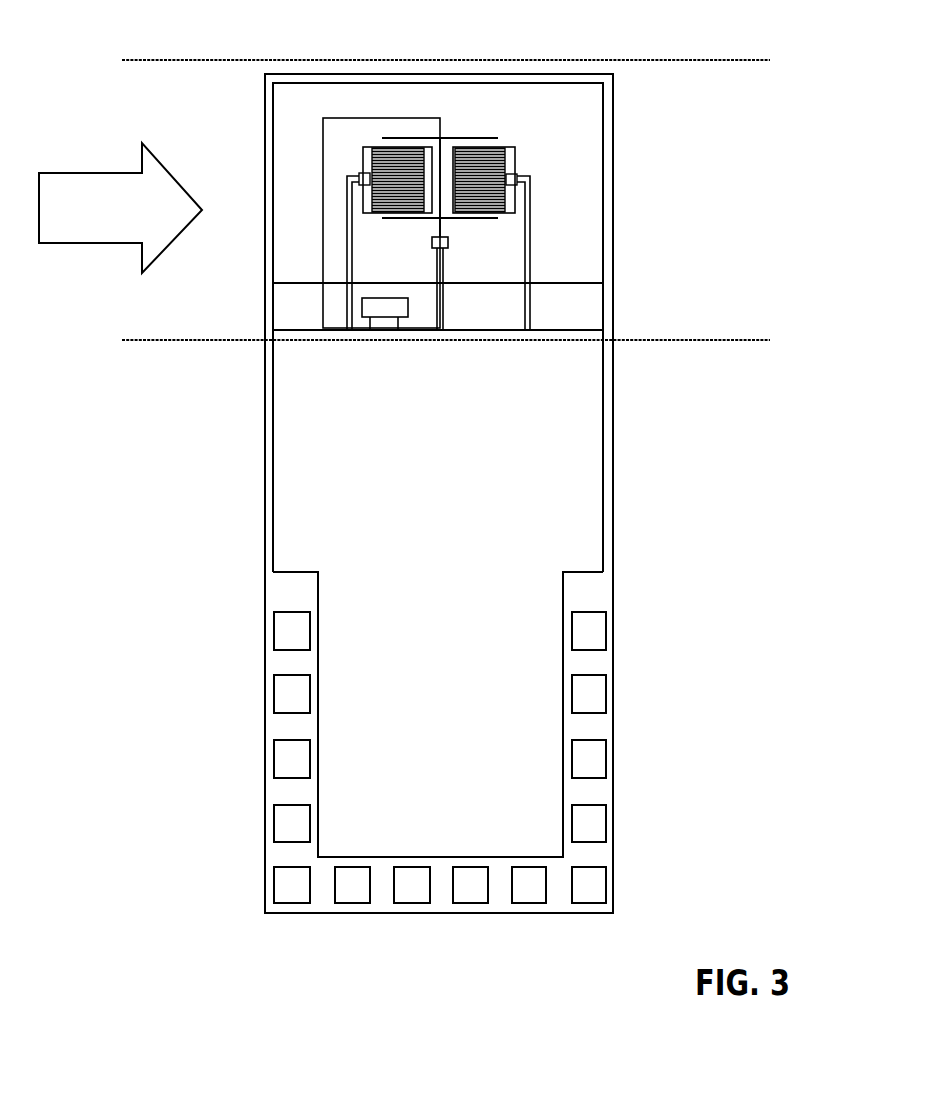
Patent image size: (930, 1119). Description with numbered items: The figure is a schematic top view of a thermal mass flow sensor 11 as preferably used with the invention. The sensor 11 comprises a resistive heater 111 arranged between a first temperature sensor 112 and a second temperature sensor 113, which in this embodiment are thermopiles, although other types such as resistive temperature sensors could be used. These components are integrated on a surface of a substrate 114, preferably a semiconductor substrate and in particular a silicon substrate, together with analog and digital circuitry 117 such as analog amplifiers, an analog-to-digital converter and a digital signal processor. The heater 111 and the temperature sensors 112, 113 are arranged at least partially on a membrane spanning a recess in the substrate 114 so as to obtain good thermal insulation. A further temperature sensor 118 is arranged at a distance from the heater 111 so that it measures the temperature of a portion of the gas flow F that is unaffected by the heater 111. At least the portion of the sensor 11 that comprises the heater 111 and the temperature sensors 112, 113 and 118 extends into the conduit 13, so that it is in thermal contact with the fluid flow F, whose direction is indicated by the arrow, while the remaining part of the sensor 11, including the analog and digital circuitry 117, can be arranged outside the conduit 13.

The gas flow F is at (120, 193).
The thermal mass flow sensor 11 is at (434, 458).
The conduit 13 is at (444, 241).
The resistive heater 111 is at (440, 166).
The first temperature sensor 112 is at (367, 166).
The second temperature sensor 113 is at (509, 169).
The substrate 114 is at (489, 493).
The analog and digital circuitry 117 is at (382, 470).
The further temperature sensor 118 is at (378, 308).